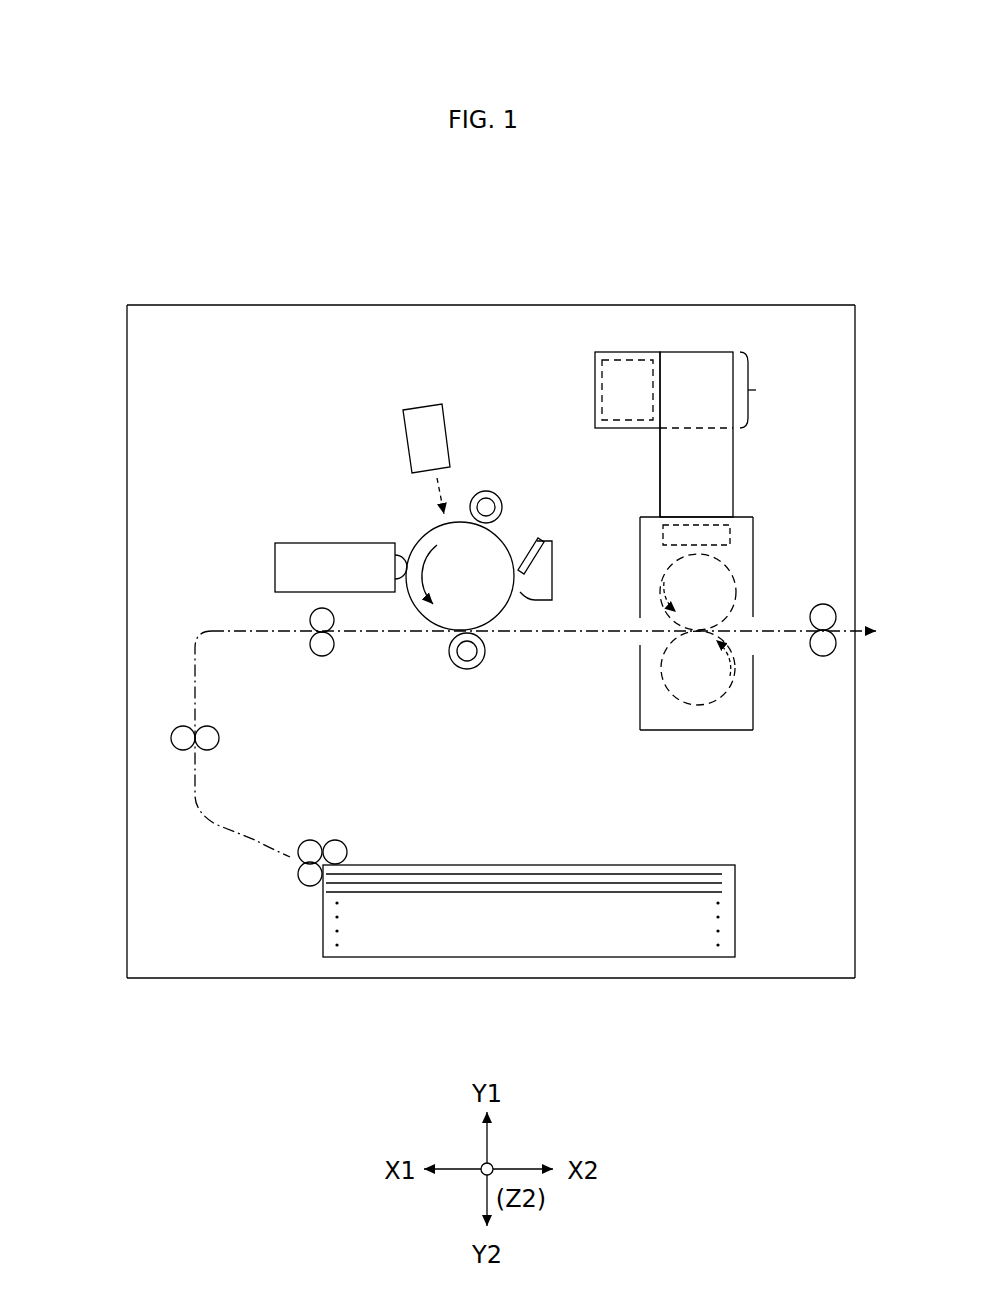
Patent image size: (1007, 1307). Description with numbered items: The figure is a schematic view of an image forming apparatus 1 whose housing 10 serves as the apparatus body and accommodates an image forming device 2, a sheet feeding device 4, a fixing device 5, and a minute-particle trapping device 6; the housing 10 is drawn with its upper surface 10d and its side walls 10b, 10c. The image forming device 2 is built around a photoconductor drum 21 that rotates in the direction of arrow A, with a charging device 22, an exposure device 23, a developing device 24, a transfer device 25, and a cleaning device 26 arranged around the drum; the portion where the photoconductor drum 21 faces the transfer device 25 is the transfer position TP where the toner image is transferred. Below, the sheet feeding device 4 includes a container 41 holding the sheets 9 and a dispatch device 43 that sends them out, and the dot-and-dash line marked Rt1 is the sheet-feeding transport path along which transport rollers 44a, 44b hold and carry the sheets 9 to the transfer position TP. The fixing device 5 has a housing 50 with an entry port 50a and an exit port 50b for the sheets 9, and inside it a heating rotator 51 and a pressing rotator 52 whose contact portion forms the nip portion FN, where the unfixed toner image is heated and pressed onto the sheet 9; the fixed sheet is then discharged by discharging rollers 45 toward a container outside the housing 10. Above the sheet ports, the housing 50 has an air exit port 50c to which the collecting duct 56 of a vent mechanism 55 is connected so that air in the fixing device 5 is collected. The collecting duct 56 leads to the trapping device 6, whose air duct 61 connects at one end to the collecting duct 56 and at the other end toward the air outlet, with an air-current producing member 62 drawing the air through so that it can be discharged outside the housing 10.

The image forming apparatus 1 is at (271, 132).
The housing 10 is at (200, 300).
The left side wall of housing 10b is at (127, 768).
The right side wall of housing 10c is at (855, 775).
The upper surface 10d is at (487, 305).
The image forming device 2 is at (291, 460).
The photoconductor drum 21 is at (428, 530).
The charging device 22 is at (487, 490).
The exposure device 23 is at (405, 440).
The developing device 24 is at (275, 567).
The transfer device 25 is at (472, 670).
The cleaning device 26 is at (541, 540).
The sheet feeding device 4 is at (295, 916).
The container 41 is at (735, 918).
The dispatch device 43 is at (325, 840).
The transport roller 44a is at (219, 740).
The transport roller 44b is at (325, 656).
The discharging rollers 45 is at (823, 604).
The sheet 9 is at (535, 864).
The fixing device 5 is at (722, 742).
The housing 50 is at (697, 633).
The entry port 50a is at (640, 627).
The exit port 50b is at (748, 637).
The air exit port 50c is at (712, 522).
The heating rotator 51 is at (732, 570).
The pressing rotator 52 is at (730, 692).
The vent mechanism 55 is at (742, 463).
The collecting duct 56 is at (660, 467).
The minute-particle trapping device 6 is at (702, 342).
The air duct 61 is at (633, 350).
The air-current producing member 62 is at (597, 390).
The transfer position TP is at (450, 636).
The fixing processing portion FN is at (693, 637).
The sheet-feeding transport path Rt1 is at (210, 634).